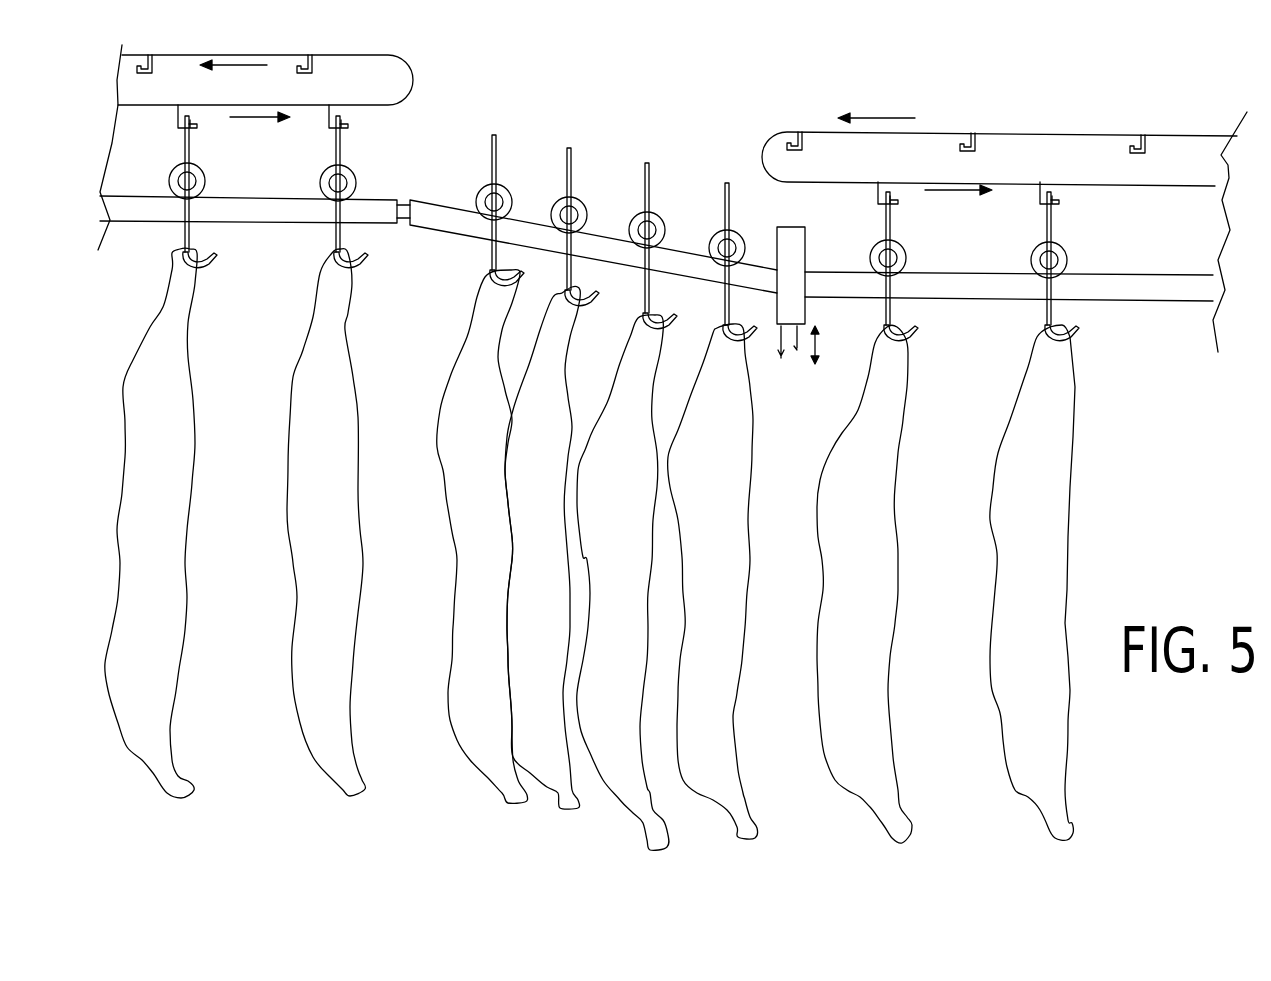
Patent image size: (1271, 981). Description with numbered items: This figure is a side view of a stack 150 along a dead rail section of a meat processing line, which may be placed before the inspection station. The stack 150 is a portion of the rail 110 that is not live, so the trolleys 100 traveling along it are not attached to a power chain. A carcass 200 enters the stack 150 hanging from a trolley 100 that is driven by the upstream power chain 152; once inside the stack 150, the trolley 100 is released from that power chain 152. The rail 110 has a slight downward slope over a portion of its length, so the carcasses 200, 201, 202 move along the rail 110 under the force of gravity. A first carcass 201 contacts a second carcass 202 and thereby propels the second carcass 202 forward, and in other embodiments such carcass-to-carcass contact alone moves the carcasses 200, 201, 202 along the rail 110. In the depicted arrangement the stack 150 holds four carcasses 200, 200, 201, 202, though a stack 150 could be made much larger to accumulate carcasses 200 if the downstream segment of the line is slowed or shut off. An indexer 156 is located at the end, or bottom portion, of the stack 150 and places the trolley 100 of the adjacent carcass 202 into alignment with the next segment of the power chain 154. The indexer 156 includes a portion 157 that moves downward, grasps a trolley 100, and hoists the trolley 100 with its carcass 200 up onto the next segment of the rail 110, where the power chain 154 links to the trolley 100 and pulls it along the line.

The trolley 100 is at (205, 180).
The rail 110 is at (243, 207).
The stack 150 is at (660, 148).
The power chain 152 is at (255, 147).
The power chain 154 is at (1035, 132).
The indexer 156 is at (792, 252).
The portion 157 is at (783, 362).
The carcass 200 is at (188, 780).
The first carcass 201 is at (648, 818).
The second carcass 202 is at (747, 810).